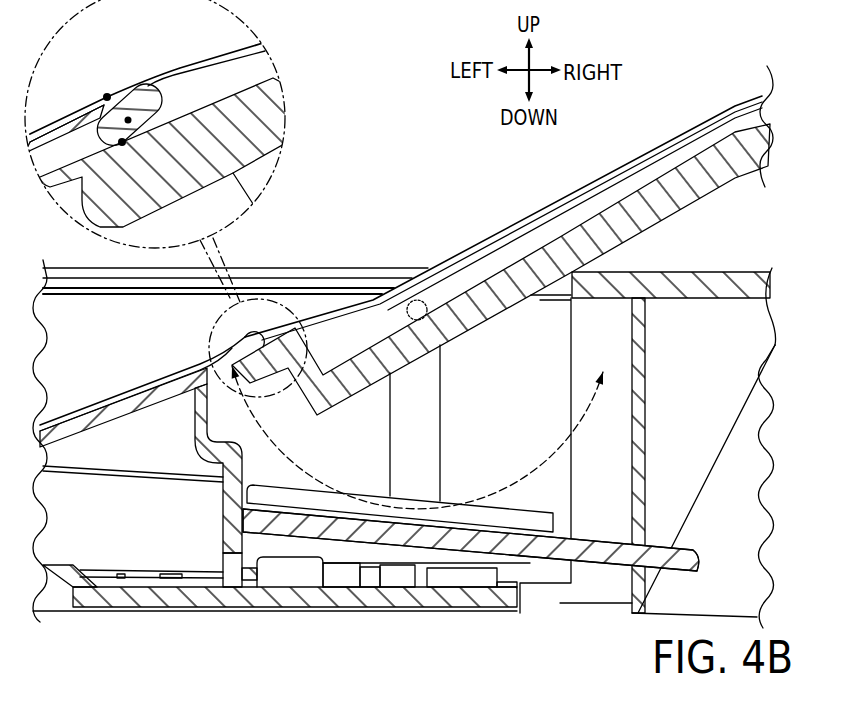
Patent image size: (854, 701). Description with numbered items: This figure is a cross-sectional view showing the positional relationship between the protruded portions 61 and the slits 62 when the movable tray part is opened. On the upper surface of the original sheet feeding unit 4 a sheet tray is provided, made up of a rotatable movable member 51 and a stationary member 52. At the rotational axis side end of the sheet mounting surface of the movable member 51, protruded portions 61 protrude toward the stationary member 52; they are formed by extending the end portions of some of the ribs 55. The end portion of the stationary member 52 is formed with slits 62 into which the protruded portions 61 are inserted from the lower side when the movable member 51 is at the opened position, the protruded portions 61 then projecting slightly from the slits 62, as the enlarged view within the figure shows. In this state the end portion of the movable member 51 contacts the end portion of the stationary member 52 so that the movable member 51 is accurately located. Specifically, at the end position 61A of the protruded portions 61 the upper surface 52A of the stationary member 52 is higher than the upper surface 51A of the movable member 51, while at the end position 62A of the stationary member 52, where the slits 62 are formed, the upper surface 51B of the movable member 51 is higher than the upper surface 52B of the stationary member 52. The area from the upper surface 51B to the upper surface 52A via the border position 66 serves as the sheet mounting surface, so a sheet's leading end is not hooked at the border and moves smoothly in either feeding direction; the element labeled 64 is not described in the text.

The original sheet feeding unit 4 is at (683, 272).
The movable member 51 is at (700, 204).
The stationary member 52 is at (83, 408).
The ribs 55 is at (438, 262).
The protruded portions 61 is at (110, 86).
The end position of the protruded portions 61A is at (78, 178).
The slits 62 is at (131, 118).
The end position of the stationary member 62A is at (158, 105).
The recess 64 is at (155, 192).
The border position 66 is at (106, 95).
The upper surface of the movable member 51A is at (82, 125).
The upper surface of the movable member 51B is at (127, 88).
The upper surface of the stationary member 52A is at (83, 110).
The upper surface of the stationary member 52B is at (147, 63).